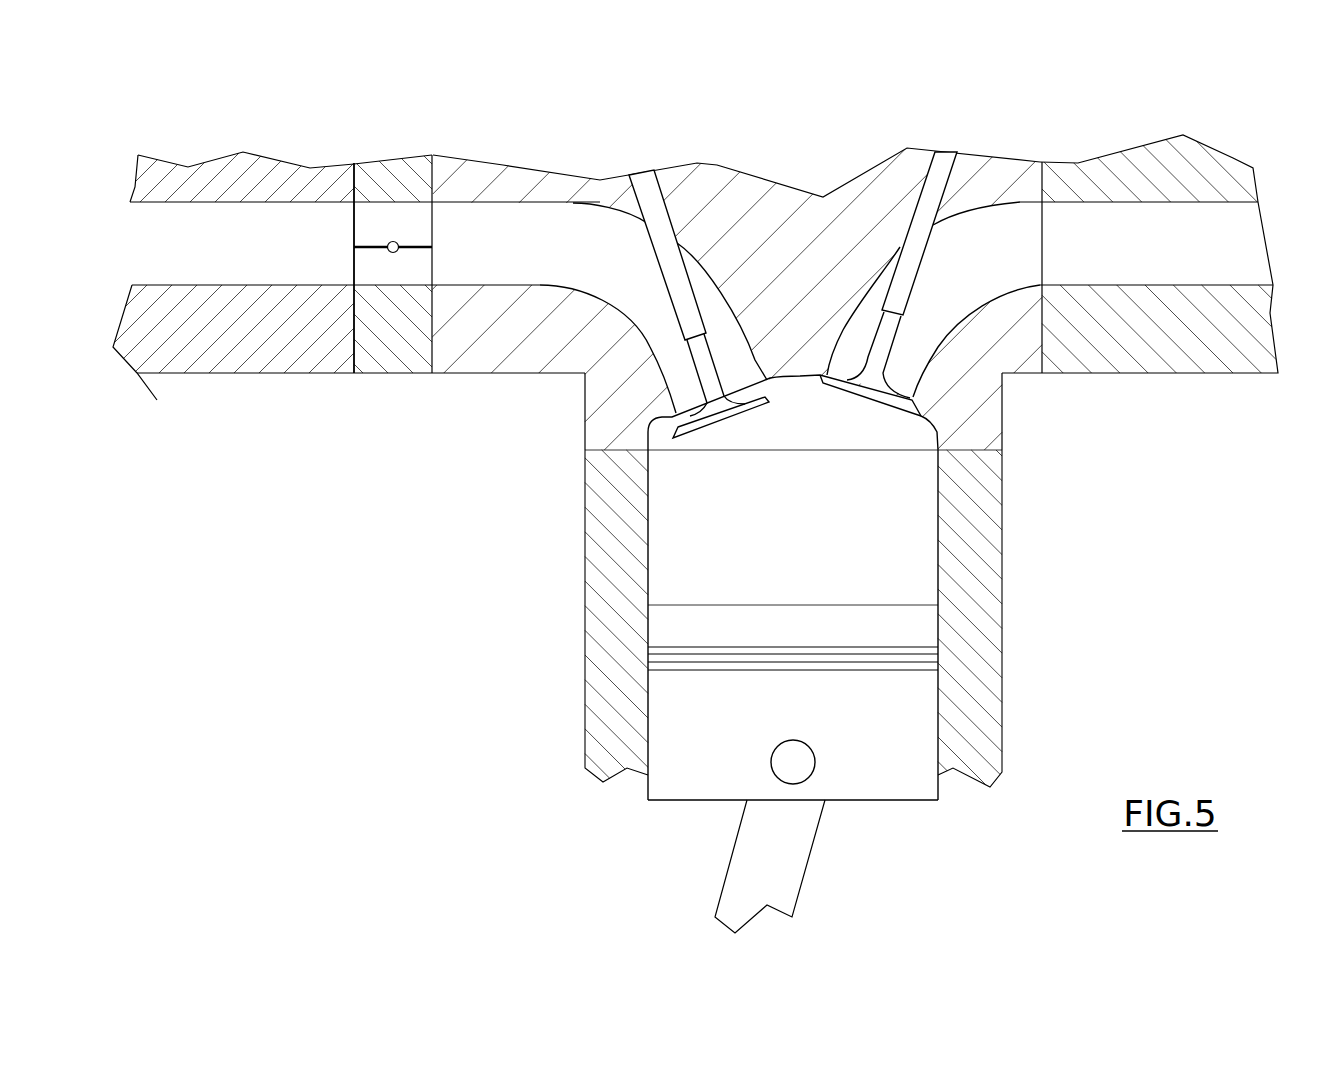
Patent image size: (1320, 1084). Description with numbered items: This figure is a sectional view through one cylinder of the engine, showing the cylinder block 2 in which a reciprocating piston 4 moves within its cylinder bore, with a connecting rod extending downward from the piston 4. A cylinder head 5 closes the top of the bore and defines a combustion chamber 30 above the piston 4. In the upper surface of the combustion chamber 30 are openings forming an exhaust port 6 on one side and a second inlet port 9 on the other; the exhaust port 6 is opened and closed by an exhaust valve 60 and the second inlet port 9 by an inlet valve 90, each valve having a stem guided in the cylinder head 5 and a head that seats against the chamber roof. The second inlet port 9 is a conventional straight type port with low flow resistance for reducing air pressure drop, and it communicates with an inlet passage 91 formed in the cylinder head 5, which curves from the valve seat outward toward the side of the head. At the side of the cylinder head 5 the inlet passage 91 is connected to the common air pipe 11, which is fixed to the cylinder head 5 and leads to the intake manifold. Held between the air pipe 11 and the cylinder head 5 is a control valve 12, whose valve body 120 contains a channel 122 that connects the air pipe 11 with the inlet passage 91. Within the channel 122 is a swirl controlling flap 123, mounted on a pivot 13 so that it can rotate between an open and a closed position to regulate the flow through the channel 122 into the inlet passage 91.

The cylinder block 2 is at (934, 517).
The reciprocating piston 4 is at (868, 770).
The cylinder head 5 is at (597, 422).
The exhaust port 6 is at (817, 376).
The second inlet port 9 is at (770, 377).
The common air pipe 11 is at (227, 362).
The control valve 12 is at (357, 374).
The shaft 13 is at (393, 241).
The combustion chamber 30 is at (805, 516).
The exhaust valve 60 is at (992, 160).
The inlet valve 90 is at (662, 260).
The inlet passage 91 is at (532, 215).
The valve body 120 is at (385, 363).
The channel 122 is at (362, 283).
The swirl controlling flap 123 is at (373, 245).